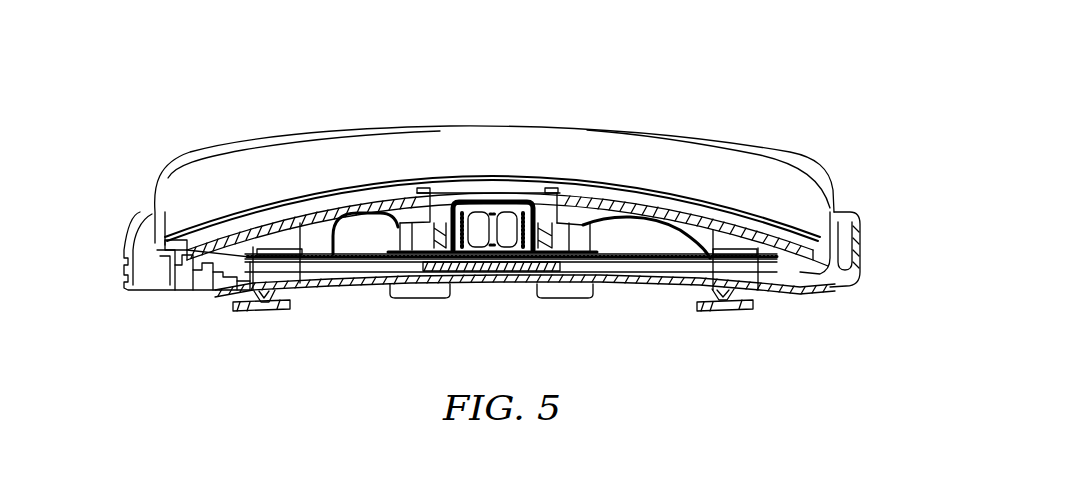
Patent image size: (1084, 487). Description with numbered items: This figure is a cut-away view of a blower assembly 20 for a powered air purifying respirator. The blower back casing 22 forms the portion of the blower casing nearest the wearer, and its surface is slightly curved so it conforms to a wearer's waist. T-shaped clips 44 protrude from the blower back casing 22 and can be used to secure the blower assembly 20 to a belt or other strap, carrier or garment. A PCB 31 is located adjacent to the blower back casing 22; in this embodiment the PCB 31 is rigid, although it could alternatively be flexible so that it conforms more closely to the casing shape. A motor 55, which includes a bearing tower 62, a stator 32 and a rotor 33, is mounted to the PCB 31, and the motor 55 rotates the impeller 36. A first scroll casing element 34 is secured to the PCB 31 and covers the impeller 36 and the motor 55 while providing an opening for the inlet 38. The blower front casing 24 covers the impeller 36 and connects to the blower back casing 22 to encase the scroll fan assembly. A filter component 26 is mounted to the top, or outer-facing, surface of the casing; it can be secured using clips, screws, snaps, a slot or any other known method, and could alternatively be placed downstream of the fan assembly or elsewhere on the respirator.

The blower assembly 20 is at (633, 47).
The blower back casing 22 is at (247, 288).
The blower front casing 24 is at (461, 126).
The filter component 26 is at (673, 156).
The PCB 31 is at (336, 259).
The stator 32 is at (503, 242).
The rotor 33 is at (516, 259).
The first scroll casing element 34 is at (605, 227).
The impeller 36 is at (425, 245).
The inlet 38 is at (548, 196).
The T-shaped clips 44 is at (270, 306).
The motor 55 is at (480, 248).
The bearing tower 62 is at (443, 263).